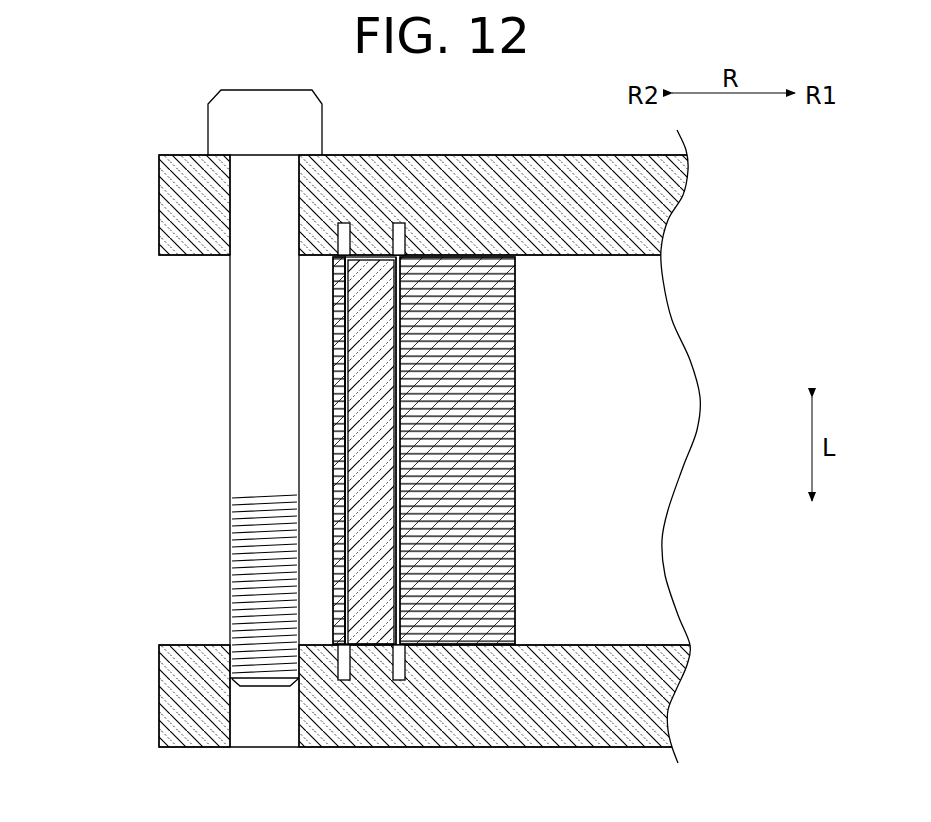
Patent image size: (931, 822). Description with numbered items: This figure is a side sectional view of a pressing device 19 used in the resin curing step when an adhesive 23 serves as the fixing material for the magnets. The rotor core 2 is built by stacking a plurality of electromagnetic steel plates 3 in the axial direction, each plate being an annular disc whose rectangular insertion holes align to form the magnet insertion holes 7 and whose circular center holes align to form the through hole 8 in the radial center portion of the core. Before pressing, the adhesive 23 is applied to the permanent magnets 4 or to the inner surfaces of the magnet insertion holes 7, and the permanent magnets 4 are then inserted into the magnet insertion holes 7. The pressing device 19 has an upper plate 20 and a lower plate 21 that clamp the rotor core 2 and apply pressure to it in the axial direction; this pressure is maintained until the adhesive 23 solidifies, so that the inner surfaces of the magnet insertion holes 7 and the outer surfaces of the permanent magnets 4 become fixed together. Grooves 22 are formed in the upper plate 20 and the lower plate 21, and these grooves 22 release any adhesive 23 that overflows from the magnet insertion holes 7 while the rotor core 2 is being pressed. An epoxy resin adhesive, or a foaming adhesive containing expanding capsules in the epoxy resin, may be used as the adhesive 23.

The rotor core 2 is at (333, 388).
The electromagnetic steel plate 3 is at (515, 360).
The permanent magnet 4 is at (345, 428).
The magnet insertion hole 7 is at (365, 447).
The through hole 8 is at (605, 562).
The pressing device 19 is at (153, 325).
The upper plate 20 is at (160, 215).
The lower plate 21 is at (158, 698).
The groove 22 is at (343, 223).
The adhesive 23 is at (333, 318).